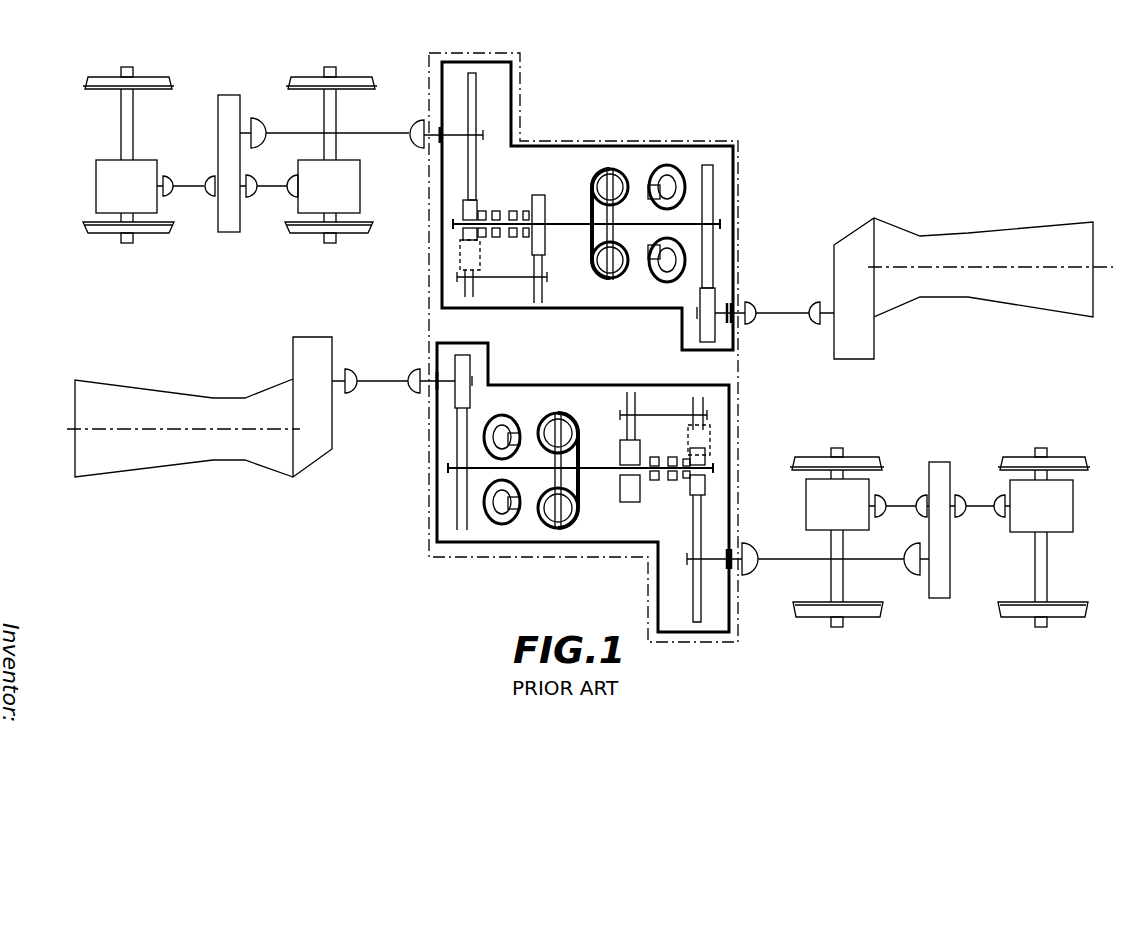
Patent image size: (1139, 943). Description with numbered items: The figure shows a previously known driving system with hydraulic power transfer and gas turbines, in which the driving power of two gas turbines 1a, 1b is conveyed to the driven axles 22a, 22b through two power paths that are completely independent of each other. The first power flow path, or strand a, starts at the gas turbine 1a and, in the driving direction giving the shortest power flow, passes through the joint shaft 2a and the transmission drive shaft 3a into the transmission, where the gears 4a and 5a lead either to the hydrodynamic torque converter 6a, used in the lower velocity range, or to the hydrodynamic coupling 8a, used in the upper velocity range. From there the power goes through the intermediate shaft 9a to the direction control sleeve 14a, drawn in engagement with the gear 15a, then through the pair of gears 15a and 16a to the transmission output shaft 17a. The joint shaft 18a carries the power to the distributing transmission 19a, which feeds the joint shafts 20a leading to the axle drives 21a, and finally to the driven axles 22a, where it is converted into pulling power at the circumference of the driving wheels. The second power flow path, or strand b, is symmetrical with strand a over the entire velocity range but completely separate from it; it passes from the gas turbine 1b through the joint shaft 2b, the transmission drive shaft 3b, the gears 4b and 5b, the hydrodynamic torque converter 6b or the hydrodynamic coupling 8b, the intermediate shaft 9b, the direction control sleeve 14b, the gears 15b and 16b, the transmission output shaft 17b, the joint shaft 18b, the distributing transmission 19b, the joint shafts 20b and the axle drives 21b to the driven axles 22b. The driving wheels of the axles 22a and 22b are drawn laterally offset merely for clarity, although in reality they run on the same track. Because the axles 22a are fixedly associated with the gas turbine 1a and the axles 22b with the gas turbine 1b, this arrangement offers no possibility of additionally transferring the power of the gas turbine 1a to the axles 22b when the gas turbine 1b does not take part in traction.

The gas turbine 1a is at (193, 412).
The gas turbine 1b is at (923, 250).
The joint shaft 2a is at (372, 381).
The joint shaft 2b is at (785, 313).
The transmission drive shaft 3a is at (422, 362).
The transmission drive shaft 3b is at (742, 310).
The gear 4a is at (467, 376).
The gear 4b is at (710, 307).
The gear 5a is at (467, 428).
The gear 5b is at (708, 197).
The hydrodynamic torque converter 6a is at (508, 422).
The hydrodynamic torque converter 6b is at (667, 183).
The hydrodynamic coupling 8a is at (577, 422).
The hydrodynamic coupling 8b is at (617, 183).
The intermediate shaft 9a is at (600, 470).
The intermediate shaft 9b is at (563, 222).
The direction control sleeve 14a is at (675, 480).
The direction control sleeve 14b is at (500, 210).
The gear 15a is at (702, 460).
The gear 15b is at (463, 203).
The gear 16a is at (700, 508).
The gear 16b is at (472, 120).
The transmission output shaft 17a is at (708, 557).
The transmission output shaft 17b is at (466, 133).
The joint shaft 18a is at (777, 560).
The joint shaft 18b is at (377, 132).
The distributing transmission 19a is at (945, 482).
The distributing transmission 19b is at (228, 220).
The joint shafts 20a is at (898, 503).
The joint shafts 20b is at (188, 188).
The axle drive 21a is at (860, 495).
The axle drive 21b is at (149, 203).
The driven axles 22a is at (840, 586).
The driven axles 22b is at (126, 136).